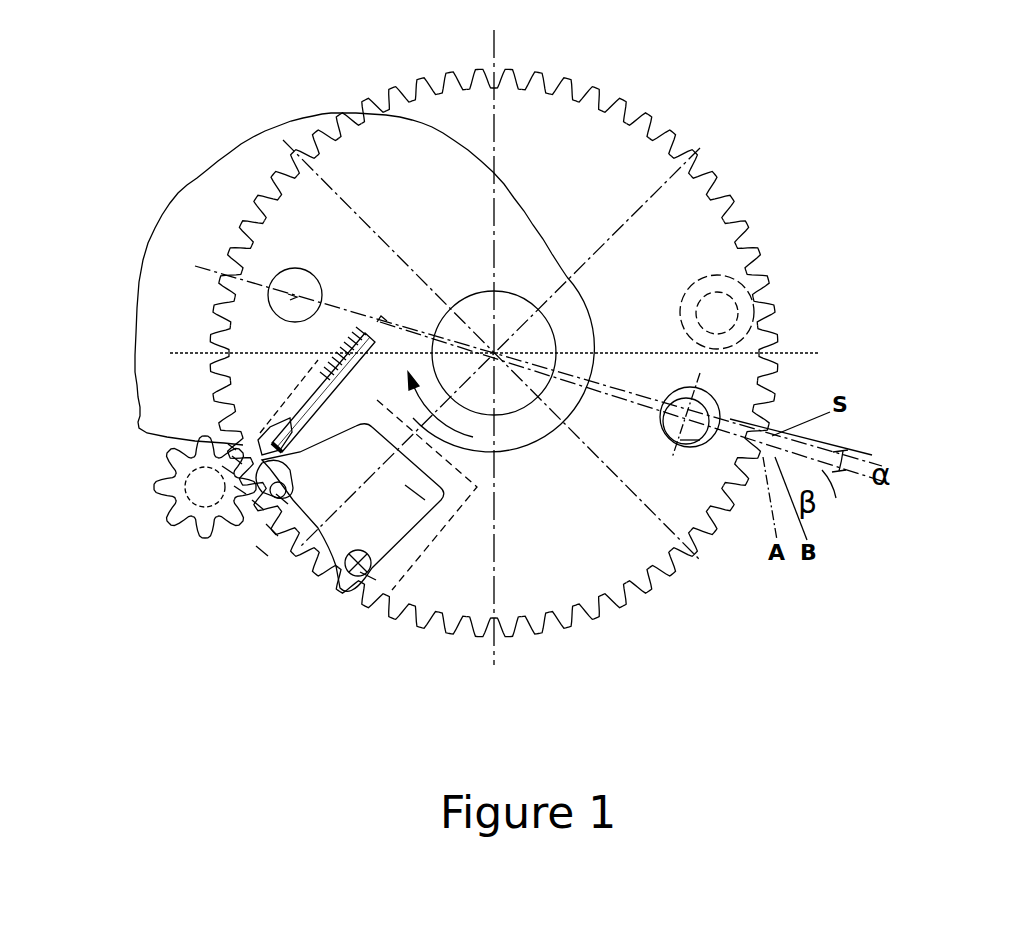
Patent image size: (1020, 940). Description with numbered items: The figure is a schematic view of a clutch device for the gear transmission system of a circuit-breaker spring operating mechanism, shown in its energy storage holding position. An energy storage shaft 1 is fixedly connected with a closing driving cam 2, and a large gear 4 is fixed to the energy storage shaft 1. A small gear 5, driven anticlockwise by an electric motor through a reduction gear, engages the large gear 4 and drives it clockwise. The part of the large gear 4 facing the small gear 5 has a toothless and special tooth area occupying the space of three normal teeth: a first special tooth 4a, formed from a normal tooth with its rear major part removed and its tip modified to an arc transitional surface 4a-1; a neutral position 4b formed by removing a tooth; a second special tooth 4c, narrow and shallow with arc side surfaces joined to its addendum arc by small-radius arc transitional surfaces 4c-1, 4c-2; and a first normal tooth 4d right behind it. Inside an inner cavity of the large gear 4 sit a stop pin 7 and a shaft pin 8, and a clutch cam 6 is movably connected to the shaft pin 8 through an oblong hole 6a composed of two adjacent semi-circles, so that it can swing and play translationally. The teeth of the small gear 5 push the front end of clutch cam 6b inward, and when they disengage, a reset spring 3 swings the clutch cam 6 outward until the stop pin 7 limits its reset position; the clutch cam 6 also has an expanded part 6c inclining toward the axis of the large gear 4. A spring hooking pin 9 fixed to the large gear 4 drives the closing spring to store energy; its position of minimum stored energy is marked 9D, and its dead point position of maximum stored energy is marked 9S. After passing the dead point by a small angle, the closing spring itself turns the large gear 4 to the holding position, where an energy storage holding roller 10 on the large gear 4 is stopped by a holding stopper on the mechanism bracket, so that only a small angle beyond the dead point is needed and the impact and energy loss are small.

The energy storage shaft 1 is at (455, 330).
The closing driving cam 2 is at (185, 222).
The reset spring of clutch cam 3 is at (290, 422).
The large gear 4 is at (232, 444).
The first special tooth 4a is at (237, 460).
The arc transitional surface 4a-1 is at (232, 447).
The neutral position 4b is at (258, 505).
The second special tooth 4c is at (282, 500).
The arc transitional surface 4c-1 is at (240, 490).
The arc transitional surface 4c-2 is at (272, 530).
The first normal tooth 4d is at (262, 552).
The small gear 5 is at (157, 490).
The clutch cam 6 is at (305, 538).
The oblong hole 6a is at (368, 576).
The front end of clutch cam 6b is at (228, 470).
The expanded part 6c is at (415, 493).
The stop pin 7 is at (276, 500).
The shaft pin 8 is at (352, 572).
The spring hooking pin 9 is at (690, 455).
The spring hooking pin position 9D is at (281, 283).
The dead point position 9S is at (720, 398).
The energy storage holding roller 10 is at (743, 290).